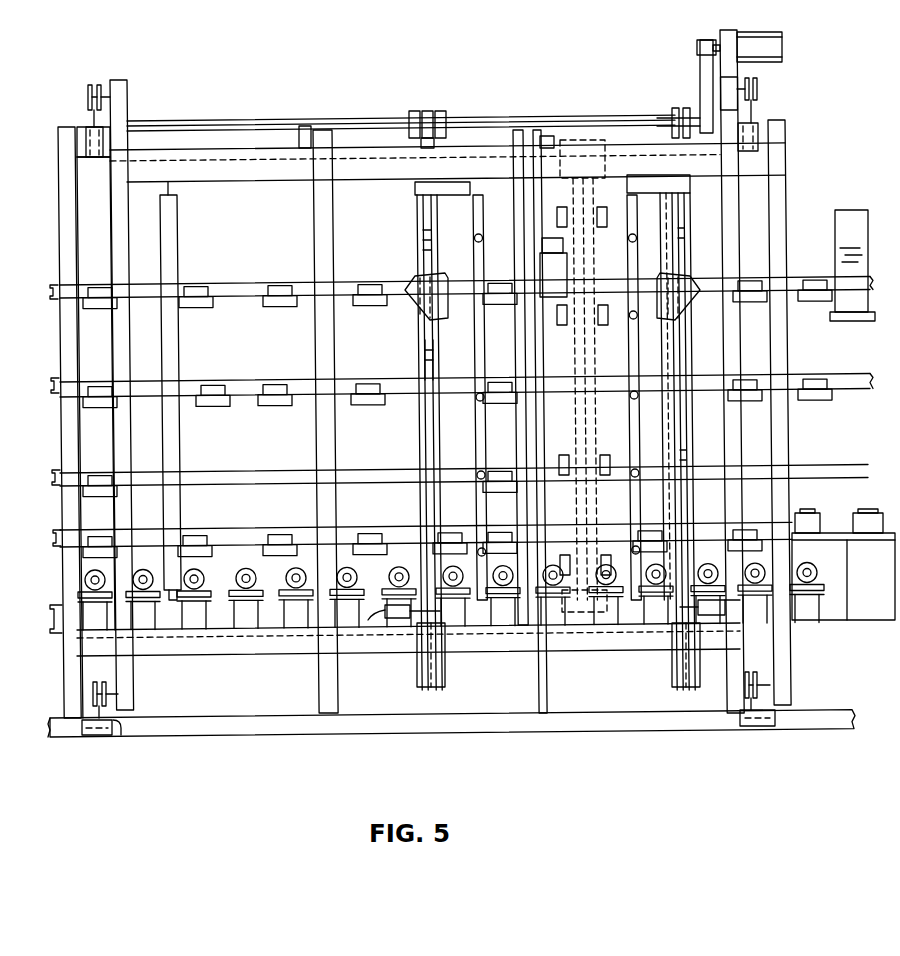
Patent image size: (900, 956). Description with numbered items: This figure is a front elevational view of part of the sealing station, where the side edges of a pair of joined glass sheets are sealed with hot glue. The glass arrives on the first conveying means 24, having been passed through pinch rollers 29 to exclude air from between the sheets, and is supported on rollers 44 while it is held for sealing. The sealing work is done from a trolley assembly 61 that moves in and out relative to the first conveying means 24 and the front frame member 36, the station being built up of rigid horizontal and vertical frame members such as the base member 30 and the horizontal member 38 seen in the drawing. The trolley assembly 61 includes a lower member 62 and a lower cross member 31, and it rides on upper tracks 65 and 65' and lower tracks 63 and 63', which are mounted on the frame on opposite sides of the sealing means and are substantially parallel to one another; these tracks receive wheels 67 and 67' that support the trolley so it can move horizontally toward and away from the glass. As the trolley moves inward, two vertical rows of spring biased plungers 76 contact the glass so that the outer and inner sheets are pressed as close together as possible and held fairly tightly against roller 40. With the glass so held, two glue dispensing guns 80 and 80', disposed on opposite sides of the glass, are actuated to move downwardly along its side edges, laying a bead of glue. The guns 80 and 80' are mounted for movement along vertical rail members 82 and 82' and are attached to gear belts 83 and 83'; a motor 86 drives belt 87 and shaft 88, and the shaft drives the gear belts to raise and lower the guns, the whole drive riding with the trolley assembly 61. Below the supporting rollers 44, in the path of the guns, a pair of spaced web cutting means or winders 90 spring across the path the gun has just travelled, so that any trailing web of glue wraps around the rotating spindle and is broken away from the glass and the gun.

The first conveying means 24 is at (52, 614).
The pinch rollers 29 is at (176, 215).
The base plate 30 is at (318, 718).
The lower cross member 31 is at (165, 652).
The front frame member 36 is at (70, 264).
The shelf 38 is at (228, 292).
The roller 40 is at (274, 400).
The rollers 44 is at (247, 590).
The trolley assembly 61 is at (482, 112).
The lower member 62 is at (120, 128).
The lower track 63 is at (209, 425).
The lower track 63' is at (799, 701).
The upper track 65 is at (67, 117).
The upper track 65' is at (784, 117).
The wheel 67 is at (461, 376).
The wheel 67' is at (797, 85).
The spring biased plungers 76 is at (480, 240).
The glue dispensing gun 80 is at (400, 278).
The glue dispensing gun 80' is at (742, 276).
The vertical rail member 82 is at (413, 436).
The vertical rail member 82' is at (729, 432).
The gear belt 83 is at (391, 357).
The gear belt 83' is at (777, 285).
The motor 86 is at (780, 46).
The belt 87 is at (698, 82).
The shaft 88 is at (557, 119).
The web cutting means 90 is at (397, 616).